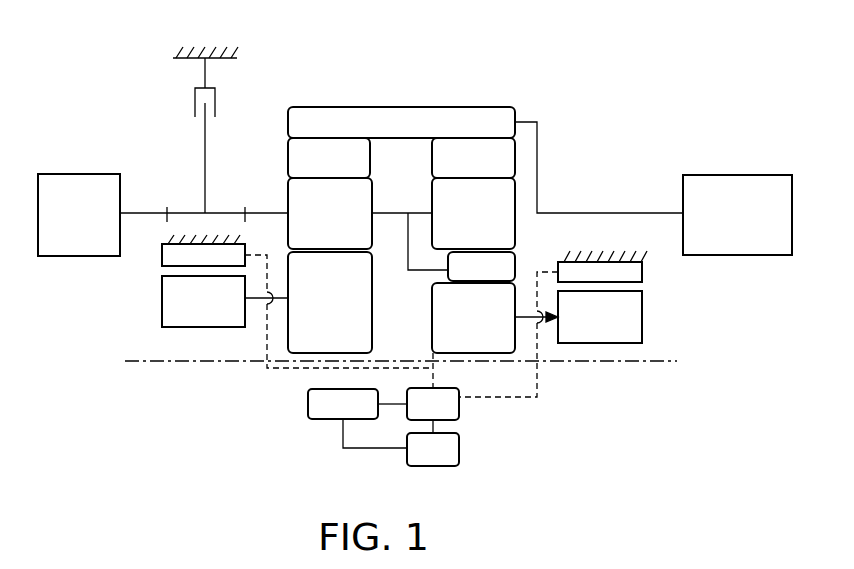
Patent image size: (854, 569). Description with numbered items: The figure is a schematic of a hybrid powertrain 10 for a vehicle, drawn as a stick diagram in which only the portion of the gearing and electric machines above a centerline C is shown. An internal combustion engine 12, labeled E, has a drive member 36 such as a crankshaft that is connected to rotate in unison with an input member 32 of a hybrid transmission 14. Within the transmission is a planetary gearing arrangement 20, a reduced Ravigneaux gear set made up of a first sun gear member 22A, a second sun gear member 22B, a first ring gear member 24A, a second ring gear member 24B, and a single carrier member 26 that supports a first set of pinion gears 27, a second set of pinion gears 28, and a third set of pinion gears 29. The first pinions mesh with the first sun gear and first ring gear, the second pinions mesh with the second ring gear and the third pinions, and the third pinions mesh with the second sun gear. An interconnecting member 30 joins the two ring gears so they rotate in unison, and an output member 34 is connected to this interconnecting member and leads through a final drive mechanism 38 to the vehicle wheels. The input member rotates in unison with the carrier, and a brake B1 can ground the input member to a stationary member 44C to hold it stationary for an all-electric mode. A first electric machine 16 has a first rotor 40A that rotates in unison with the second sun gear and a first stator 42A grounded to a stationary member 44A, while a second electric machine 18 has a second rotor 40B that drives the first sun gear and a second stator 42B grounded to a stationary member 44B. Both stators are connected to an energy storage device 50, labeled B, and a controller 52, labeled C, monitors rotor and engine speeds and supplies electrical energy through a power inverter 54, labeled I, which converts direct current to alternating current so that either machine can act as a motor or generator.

The hybrid powertrain 10 is at (600, 98).
The internal combustion engine 12 is at (78, 174).
The hybrid transmission 14 is at (345, 441).
The first electric machine 16 is at (628, 307).
The second electric machine 18 is at (177, 297).
The planetary gearing arrangement 20 is at (373, 197).
The first sun gear member 22A is at (330, 302).
The second sun gear member 22B is at (473, 318).
The first ring gear member 24A is at (329, 158).
The second ring gear member 24B is at (473, 158).
The carrier member 26 is at (271, 213).
The first set of pinion gears 27 is at (330, 213).
The second set of pinion gears 28 is at (473, 213).
The third set of pinion gears 29 is at (481, 266).
The interconnecting member 30 is at (405, 107).
The input member 32 is at (181, 213).
The output member 34 is at (594, 213).
The drive member 36 is at (137, 213).
The final drive mechanism 38 is at (737, 215).
The first rotor 40A is at (578, 317).
The second rotor 40B is at (225, 301).
The first stator 42A is at (645, 272).
The second stator 42B is at (162, 255).
The stationary member 44A is at (645, 257).
The stationary member 44B is at (165, 243).
The stationary member 44C is at (178, 54).
The brake B1 is at (190, 128).
The centerline C is at (165, 362).
The energy storage device 50 is at (308, 402).
The controller 52 is at (459, 448).
The power inverter 54 is at (459, 410).